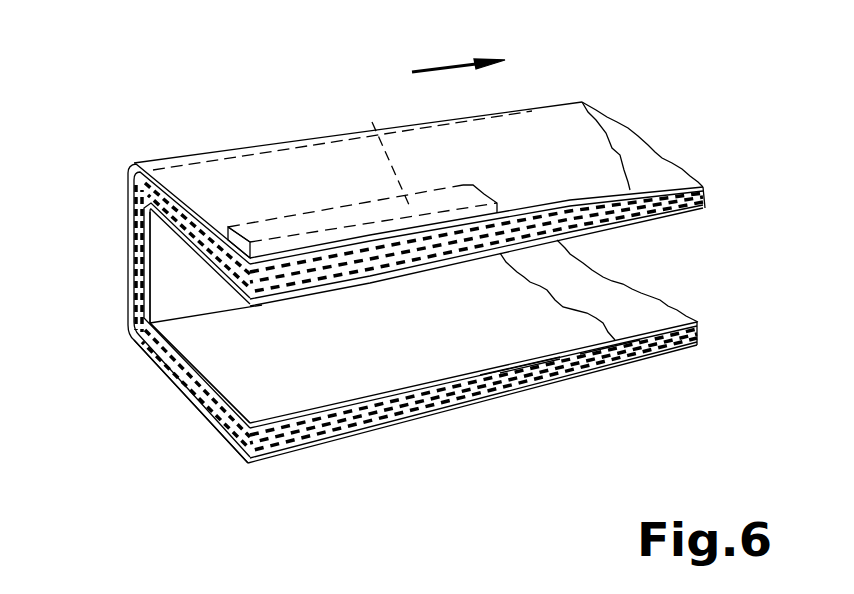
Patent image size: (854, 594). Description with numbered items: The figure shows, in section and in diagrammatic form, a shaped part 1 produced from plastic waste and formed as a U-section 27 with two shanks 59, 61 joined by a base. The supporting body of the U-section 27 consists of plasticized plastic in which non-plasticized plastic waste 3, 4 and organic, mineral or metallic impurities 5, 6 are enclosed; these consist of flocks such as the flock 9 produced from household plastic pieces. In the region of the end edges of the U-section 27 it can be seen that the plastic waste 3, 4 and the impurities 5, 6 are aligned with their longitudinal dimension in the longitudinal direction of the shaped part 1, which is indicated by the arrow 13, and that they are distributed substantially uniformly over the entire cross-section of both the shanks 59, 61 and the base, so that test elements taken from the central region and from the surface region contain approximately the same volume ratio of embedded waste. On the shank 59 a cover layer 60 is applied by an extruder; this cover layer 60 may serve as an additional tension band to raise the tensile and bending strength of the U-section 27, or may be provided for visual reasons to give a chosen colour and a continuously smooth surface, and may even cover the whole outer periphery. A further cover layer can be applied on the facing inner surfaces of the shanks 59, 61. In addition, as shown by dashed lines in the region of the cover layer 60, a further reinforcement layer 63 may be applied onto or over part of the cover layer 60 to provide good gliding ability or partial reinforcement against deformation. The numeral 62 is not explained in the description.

The shaped part 1 is at (146, 119).
The plastic waste 3 is at (357, 430).
The plastic waste 4 is at (450, 406).
The impurity 5 is at (597, 366).
The impurity 6 is at (526, 376).
The flock 9 is at (508, 394).
The arrow 13 is at (431, 70).
The U-section 27 is at (678, 280).
The shank 59 is at (185, 245).
The cover layer 60 is at (296, 184).
The shank 61 is at (194, 401).
The front edge of bottom panel 62 is at (271, 399).
The reinforcement layer 63 is at (371, 119).